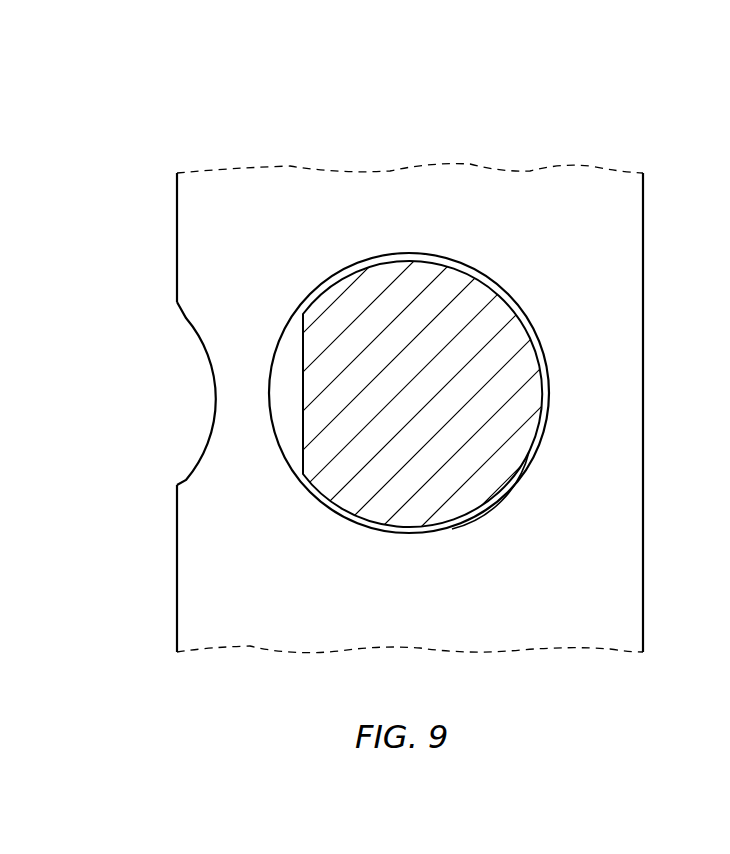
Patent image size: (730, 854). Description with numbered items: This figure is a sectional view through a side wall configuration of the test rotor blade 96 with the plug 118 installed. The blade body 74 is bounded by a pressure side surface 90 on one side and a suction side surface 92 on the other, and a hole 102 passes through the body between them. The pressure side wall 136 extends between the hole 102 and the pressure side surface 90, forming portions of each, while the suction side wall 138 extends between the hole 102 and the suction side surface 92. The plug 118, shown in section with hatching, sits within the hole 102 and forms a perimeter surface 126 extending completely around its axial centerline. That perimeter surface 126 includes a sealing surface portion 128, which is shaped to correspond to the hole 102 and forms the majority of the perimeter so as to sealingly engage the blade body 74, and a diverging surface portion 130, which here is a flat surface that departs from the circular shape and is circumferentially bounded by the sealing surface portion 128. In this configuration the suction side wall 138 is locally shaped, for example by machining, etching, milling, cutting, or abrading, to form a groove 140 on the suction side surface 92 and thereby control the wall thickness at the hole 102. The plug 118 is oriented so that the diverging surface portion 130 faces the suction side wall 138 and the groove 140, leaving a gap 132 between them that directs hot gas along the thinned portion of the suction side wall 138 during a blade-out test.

The blade body 74 is at (490, 185).
The pressure side surface 90 is at (643, 293).
The suction side surface 92 is at (177, 218).
The test rotor blade 96 is at (618, 102).
The hole 102 is at (503, 508).
The plug 118 is at (497, 398).
The perimeter surface 126 is at (440, 528).
The sealing surface portion 128 is at (510, 290).
The diverging surface portion 130 is at (303, 453).
The gap 132 is at (290, 378).
The pressure side wall 136 is at (597, 437).
The suction side wall 138 is at (226, 447).
The groove 140 is at (190, 394).